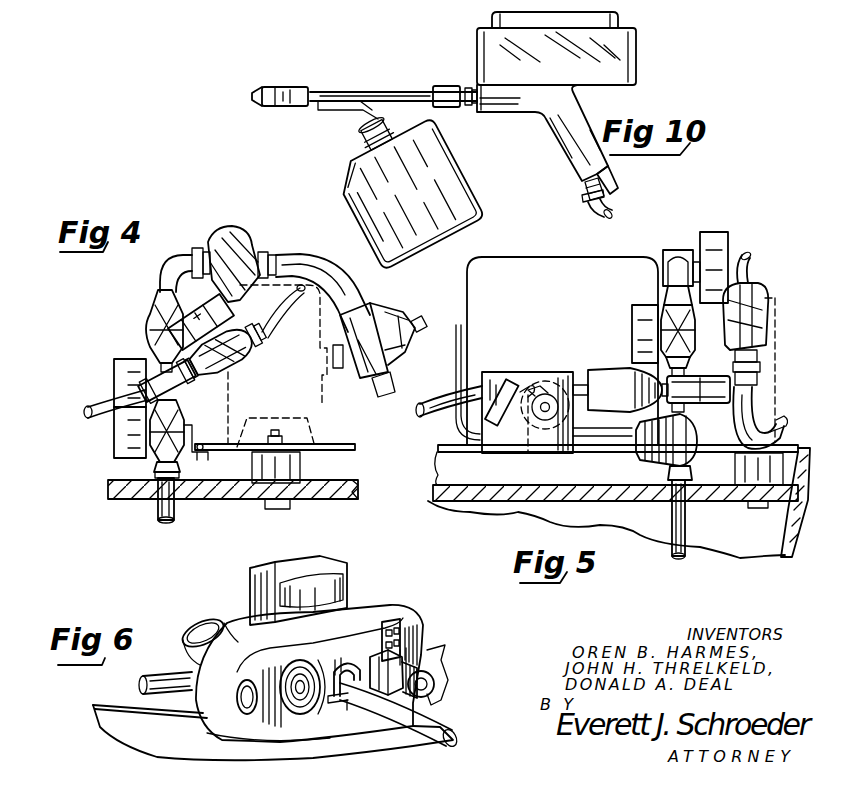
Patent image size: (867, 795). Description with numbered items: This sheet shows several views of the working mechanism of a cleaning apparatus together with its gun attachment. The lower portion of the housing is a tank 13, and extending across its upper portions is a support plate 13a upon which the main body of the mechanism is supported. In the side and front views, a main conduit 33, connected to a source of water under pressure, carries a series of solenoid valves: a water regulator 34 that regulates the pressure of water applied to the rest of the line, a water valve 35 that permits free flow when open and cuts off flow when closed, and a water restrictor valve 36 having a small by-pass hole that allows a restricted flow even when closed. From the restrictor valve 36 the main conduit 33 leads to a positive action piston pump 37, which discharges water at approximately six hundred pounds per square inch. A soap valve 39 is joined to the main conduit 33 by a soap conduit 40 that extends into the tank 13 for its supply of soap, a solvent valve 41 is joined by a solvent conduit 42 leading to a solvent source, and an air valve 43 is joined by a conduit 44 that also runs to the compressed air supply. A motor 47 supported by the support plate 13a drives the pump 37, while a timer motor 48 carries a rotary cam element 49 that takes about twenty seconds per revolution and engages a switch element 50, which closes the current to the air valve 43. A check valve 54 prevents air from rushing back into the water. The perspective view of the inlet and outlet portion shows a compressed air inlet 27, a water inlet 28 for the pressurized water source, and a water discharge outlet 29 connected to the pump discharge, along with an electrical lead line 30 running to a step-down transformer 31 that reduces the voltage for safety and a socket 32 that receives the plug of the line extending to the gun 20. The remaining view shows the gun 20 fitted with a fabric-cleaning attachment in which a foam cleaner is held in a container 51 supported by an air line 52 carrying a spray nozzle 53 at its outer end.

In FIG. 5, the tank 13 is at (787, 558).
In FIG. 4, the support plate 13a is at (330, 487).
In FIG. 5, the support plate 13a is at (783, 508).
In FIG. 10, the gun 20 is at (468, 42).
In FIG. 6, the compressed air inlet 27 is at (240, 680).
In FIG. 6, the water inlet 28 is at (318, 656).
In FIG. 6, the water discharge outlet 29 is at (425, 677).
In FIG. 6, the electrical lead line 30 is at (430, 723).
In FIG. 6, the step-down transformer 31 is at (267, 575).
In FIG. 6, the socket 32 is at (400, 640).
In FIG. 4, the main conduit 33 is at (323, 240).
In FIG. 5, the main conduit 33 is at (762, 402).
In FIG. 4, the water regulator 34 is at (147, 327).
In FIG. 4, the water valve 35 is at (257, 216).
In FIG. 5, the water valve 35 is at (745, 217).
In FIG. 5, the water restrictor valve 36 is at (648, 305).
In FIG. 4, the pump 37 is at (312, 405).
In FIG. 5, the pump 37 is at (772, 360).
In FIG. 4, the soap valve 39 is at (120, 443).
In FIG. 5, the soap valve 39 is at (660, 457).
In FIG. 4, the soap conduit 40 is at (158, 512).
In FIG. 5, the soap conduit 40 is at (686, 540).
In FIG. 4, the solvent valve 41 is at (117, 373).
In FIG. 5, the solvent valve 41 is at (605, 370).
In FIG. 4, the solvent conduit 42 is at (116, 404).
In FIG. 5, the solvent conduit 42 is at (438, 422).
In FIG. 4, the air valve 43 is at (205, 307).
In FIG. 5, the air valve 43 is at (763, 297).
In FIG. 5, the conduit 44 is at (748, 273).
In FIG. 6, the conduit 44 is at (143, 684).
In FIG. 5, the motor 47 is at (560, 248).
In FIG. 5, the timer motor 48 is at (557, 427).
In FIG. 5, the rotary cam element 49 is at (588, 363).
In FIG. 5, the switch element 50 is at (526, 390).
In FIG. 10, the container 51 is at (466, 200).
In FIG. 10, the air line 52 is at (393, 64).
In FIG. 10, the spray nozzle 53 is at (262, 104).
In FIG. 5, the check valve 54 is at (725, 398).